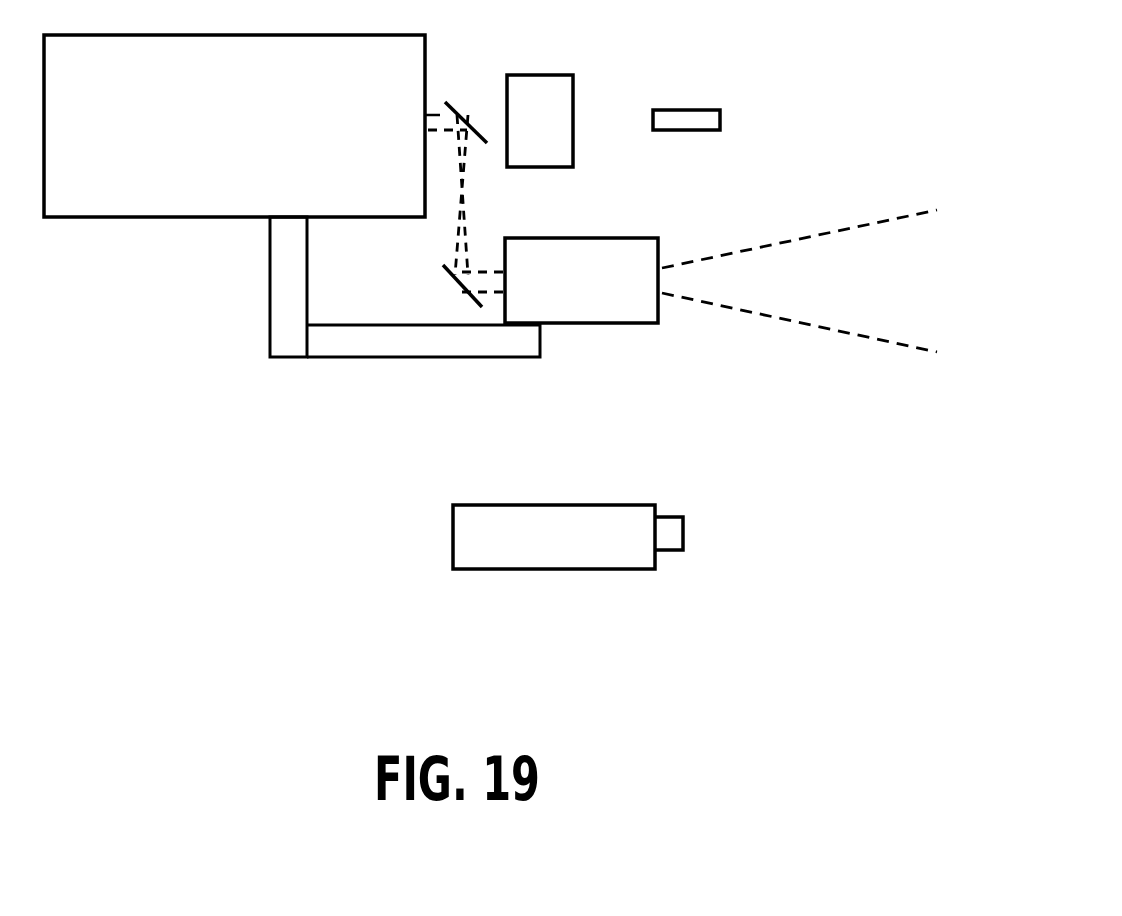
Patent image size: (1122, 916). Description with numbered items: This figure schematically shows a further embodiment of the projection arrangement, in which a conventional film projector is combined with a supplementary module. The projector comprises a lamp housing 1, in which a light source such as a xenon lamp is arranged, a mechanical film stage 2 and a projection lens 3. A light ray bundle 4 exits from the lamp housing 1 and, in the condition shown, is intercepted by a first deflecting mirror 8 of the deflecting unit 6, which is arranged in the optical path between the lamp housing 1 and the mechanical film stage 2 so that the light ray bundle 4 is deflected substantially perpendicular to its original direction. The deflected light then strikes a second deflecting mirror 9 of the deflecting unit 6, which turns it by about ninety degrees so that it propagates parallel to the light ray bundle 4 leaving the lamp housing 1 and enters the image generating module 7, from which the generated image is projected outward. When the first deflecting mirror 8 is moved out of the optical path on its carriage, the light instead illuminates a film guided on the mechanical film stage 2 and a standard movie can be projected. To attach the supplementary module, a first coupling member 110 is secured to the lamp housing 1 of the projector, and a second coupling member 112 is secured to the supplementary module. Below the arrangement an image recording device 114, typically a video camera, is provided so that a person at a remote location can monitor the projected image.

The lamp housing 1 is at (190, 227).
The mechanical film stage 2 is at (538, 75).
The projection lens 3 is at (681, 110).
The light ray bundle 4 is at (433, 115).
The deflecting unit 6 is at (427, 233).
The image generating module 7 is at (600, 326).
The first deflecting mirror 8 is at (466, 112).
The second deflecting mirror 9 is at (455, 290).
The first coupling member 110 is at (268, 326).
The second coupling member 112 is at (347, 352).
The image recording device 114 is at (560, 570).